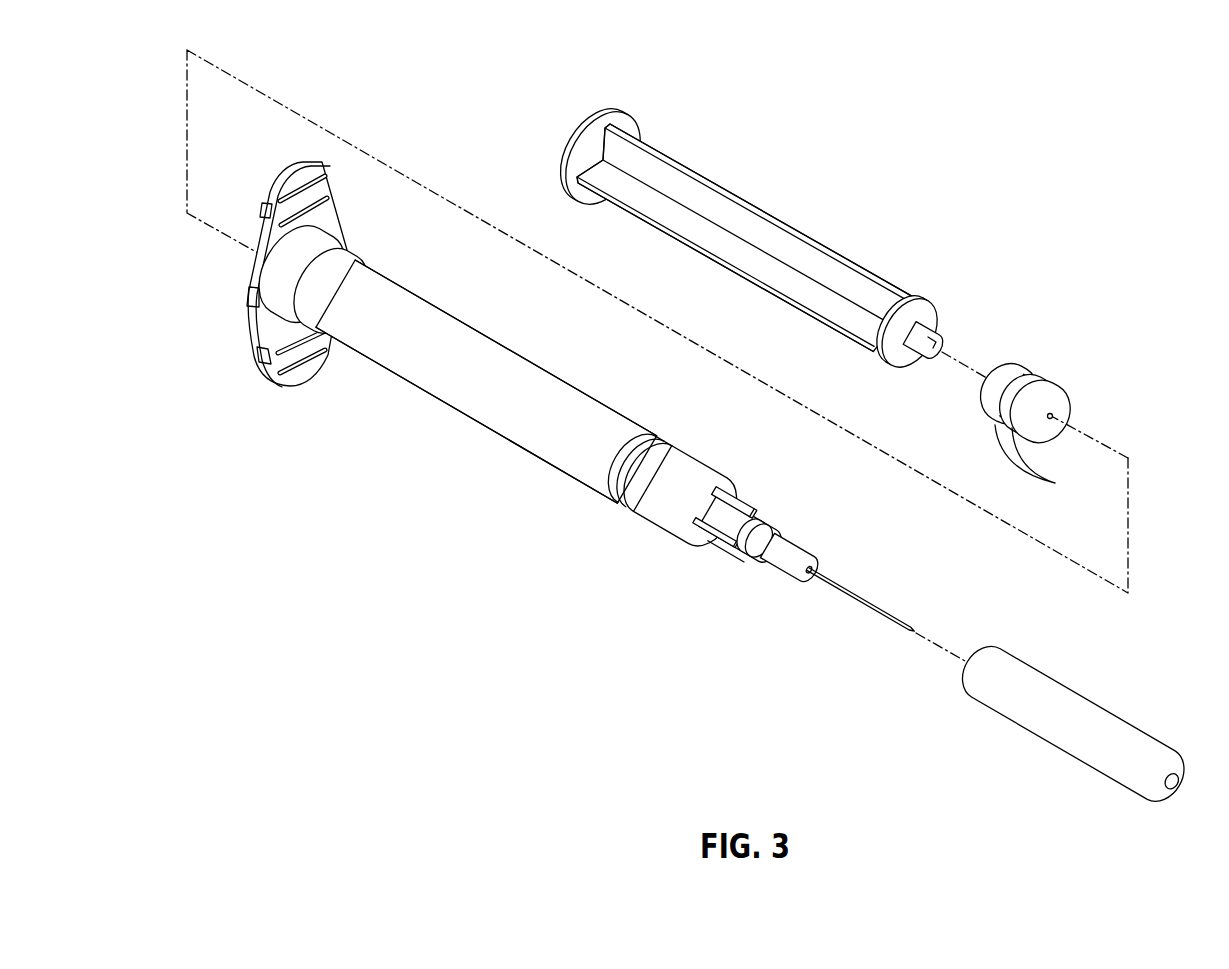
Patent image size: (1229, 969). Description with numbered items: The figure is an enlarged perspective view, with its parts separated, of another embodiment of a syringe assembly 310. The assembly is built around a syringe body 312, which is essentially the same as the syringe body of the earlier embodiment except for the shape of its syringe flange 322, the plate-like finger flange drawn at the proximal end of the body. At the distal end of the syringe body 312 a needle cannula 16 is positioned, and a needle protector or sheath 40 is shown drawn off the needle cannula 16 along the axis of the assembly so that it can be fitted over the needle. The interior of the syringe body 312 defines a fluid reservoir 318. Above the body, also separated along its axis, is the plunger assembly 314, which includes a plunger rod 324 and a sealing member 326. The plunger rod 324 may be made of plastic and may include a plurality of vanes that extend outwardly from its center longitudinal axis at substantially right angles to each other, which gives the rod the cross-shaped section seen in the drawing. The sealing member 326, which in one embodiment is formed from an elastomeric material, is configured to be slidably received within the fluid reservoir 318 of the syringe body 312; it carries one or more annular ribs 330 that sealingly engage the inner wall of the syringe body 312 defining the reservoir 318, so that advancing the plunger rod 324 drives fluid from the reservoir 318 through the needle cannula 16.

The syringe assembly 310 is at (1114, 142).
The syringe body 312 is at (507, 360).
The plunger assembly 314 is at (1012, 287).
The fluid reservoir 318 is at (543, 433).
The syringe flange 322 is at (243, 355).
The plunger rod 324 is at (820, 228).
The sealing member 326 is at (1076, 364).
The annular ribs 330 is at (1049, 462).
The needle cannula 16 is at (862, 597).
The needle protector or sheath 40 is at (1073, 703).